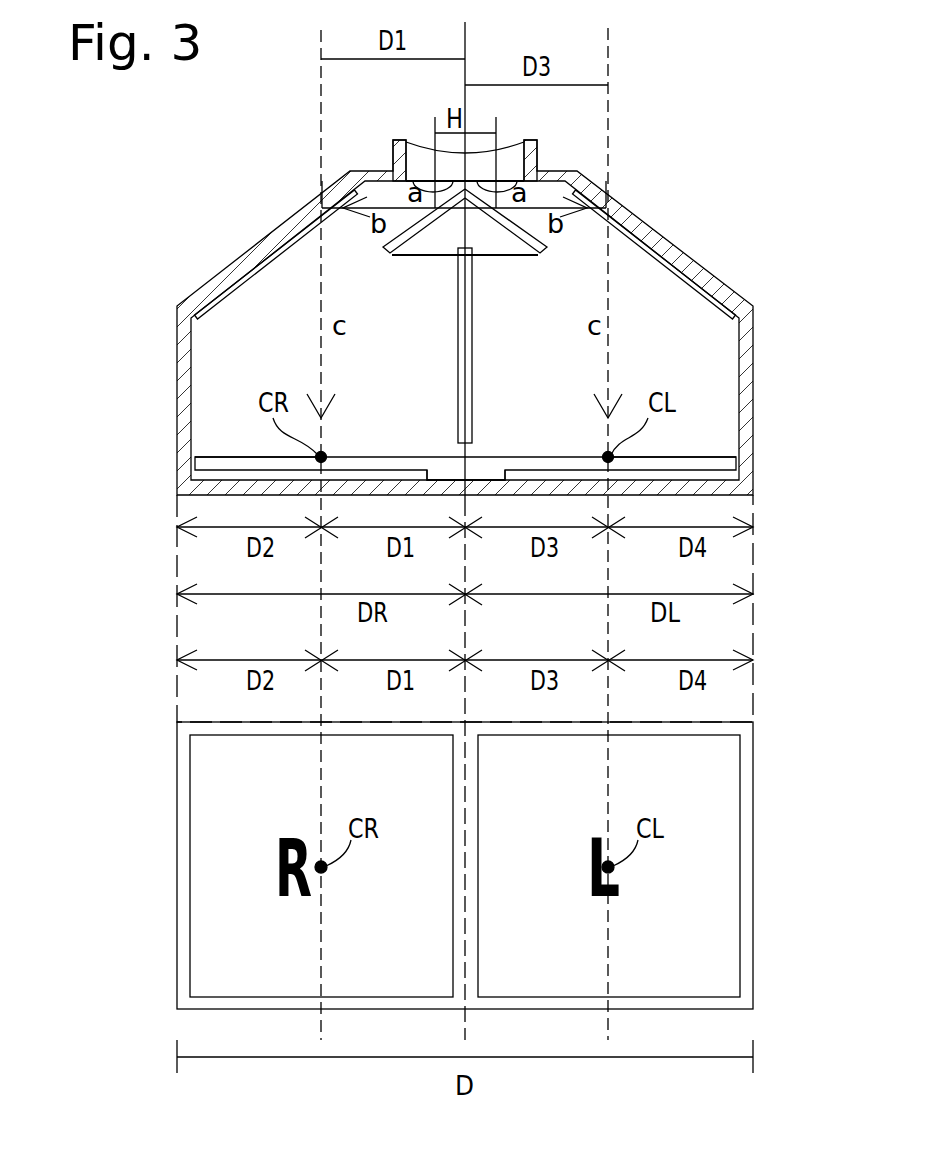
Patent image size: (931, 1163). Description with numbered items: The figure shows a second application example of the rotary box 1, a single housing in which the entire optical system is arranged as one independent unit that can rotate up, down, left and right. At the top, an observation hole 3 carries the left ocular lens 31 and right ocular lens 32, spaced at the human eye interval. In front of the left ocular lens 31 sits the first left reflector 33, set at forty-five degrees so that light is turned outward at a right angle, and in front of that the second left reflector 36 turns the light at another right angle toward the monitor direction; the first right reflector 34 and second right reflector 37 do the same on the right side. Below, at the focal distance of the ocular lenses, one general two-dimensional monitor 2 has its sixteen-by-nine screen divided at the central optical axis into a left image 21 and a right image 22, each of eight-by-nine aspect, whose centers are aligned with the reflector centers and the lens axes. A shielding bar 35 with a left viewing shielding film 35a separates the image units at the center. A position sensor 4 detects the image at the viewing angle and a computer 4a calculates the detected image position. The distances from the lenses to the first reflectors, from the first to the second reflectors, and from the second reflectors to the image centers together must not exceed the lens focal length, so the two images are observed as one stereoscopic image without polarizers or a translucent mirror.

The rotary box 1 is at (688, 262).
The monitor 2 is at (705, 458).
The observation hole 3 is at (538, 152).
The position sensor 4 is at (442, 475).
The computer 4a is at (466, 475).
The left image 21 is at (237, 452).
The right image 22 is at (676, 458).
The left ocular lens 31 is at (400, 165).
The right ocular lens 32 is at (505, 172).
The first left reflector 33 is at (410, 250).
The first right reflector 34 is at (512, 247).
The shielding bar 35 is at (473, 352).
The left viewing shielding film 35a is at (445, 257).
The second left reflector 36 is at (236, 287).
The second right reflector 37 is at (697, 288).